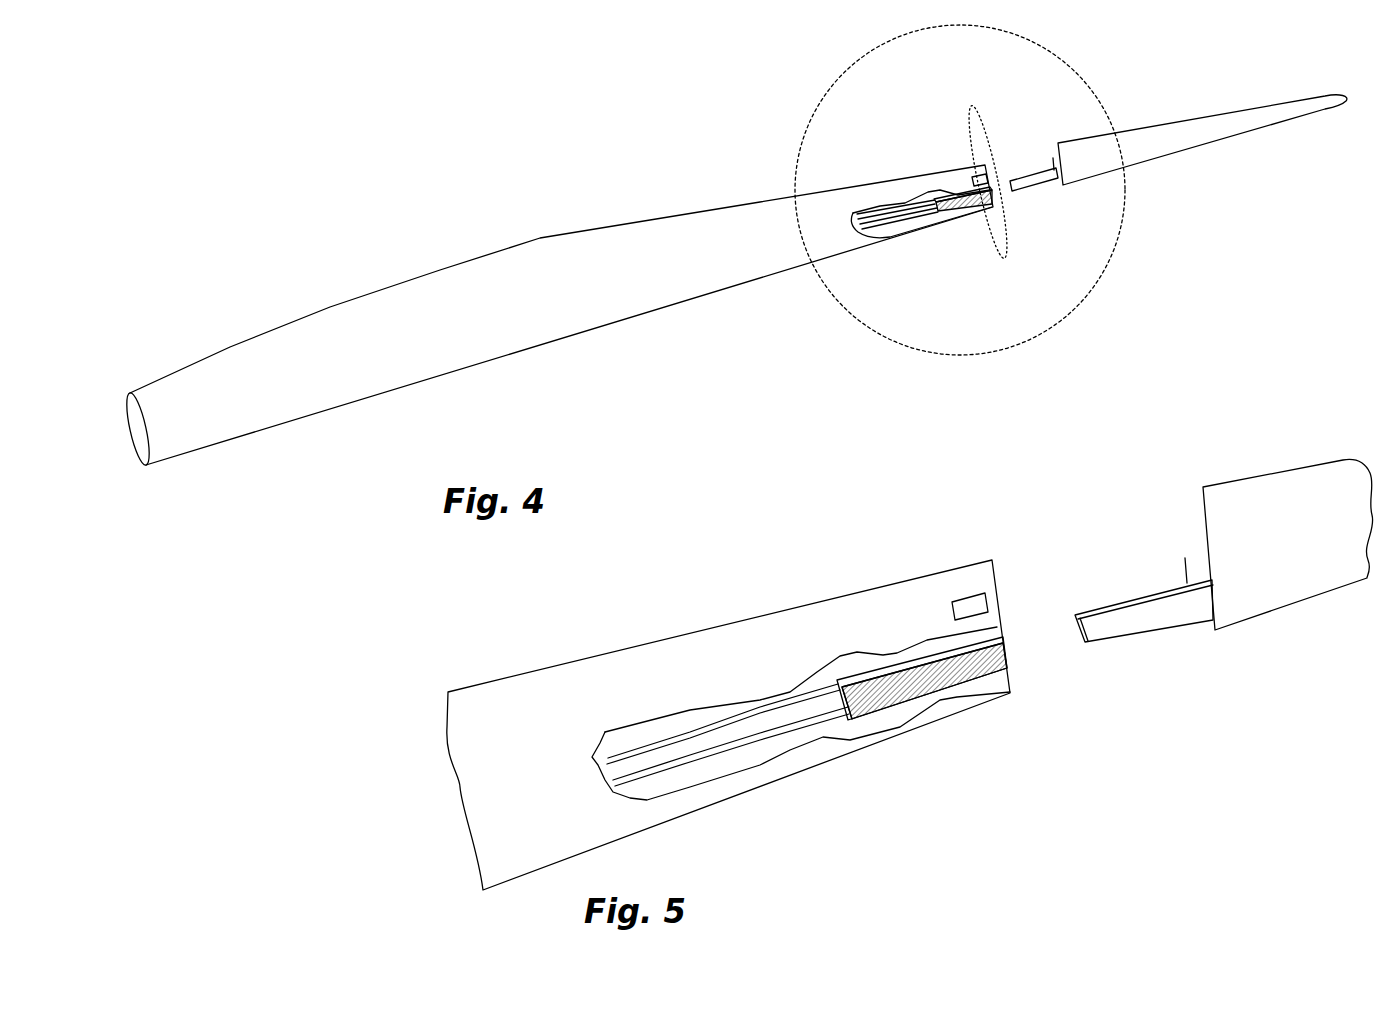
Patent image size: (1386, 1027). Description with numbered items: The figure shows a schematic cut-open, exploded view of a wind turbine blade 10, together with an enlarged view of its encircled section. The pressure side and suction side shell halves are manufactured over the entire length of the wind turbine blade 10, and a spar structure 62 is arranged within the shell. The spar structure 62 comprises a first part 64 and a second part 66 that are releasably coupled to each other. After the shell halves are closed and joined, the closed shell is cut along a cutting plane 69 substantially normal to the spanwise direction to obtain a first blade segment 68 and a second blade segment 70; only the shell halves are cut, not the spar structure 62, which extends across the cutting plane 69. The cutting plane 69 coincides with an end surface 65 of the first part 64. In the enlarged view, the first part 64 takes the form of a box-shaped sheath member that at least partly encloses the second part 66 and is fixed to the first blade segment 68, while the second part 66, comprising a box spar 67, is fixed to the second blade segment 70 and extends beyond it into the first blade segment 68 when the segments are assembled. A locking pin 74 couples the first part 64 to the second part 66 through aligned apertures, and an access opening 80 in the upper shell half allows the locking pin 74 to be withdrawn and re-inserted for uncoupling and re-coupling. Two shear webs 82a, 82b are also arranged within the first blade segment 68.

In FIG. 4, the wind turbine blade 10 is at (505, 181).
In FIG. 4, the spar structure 62 is at (1030, 215).
In FIG. 5, the spar structure 62 is at (1132, 697).
In FIG. 5, the first part of the spar structure 64 is at (927, 687).
In FIG. 4, the end surface of the first part 65 is at (963, 199).
In FIG. 5, the end surface of the first part 65 is at (1010, 662).
In FIG. 5, the second part of the spar structure 66 is at (1111, 587).
In FIG. 5, the box spar 67 is at (1160, 608).
In FIG. 4, the first blade segment 68 is at (921, 214).
In FIG. 5, the first blade segment 68 is at (593, 678).
In FIG. 4, the cutting plane 69 is at (998, 232).
In FIG. 4, the second blade segment 70 is at (1208, 125).
In FIG. 5, the second blade segment 70 is at (1285, 477).
In FIG. 5, the locking pin 74 is at (1183, 567).
In FIG. 4, the access opening 80 is at (980, 180).
In FIG. 5, the access opening 80 is at (958, 602).
In FIG. 4, the first shear web 82a is at (896, 209).
In FIG. 5, the first shear web 82a is at (725, 720).
In FIG. 4, the second shear web 82b is at (899, 218).
In FIG. 5, the second shear web 82b is at (755, 740).